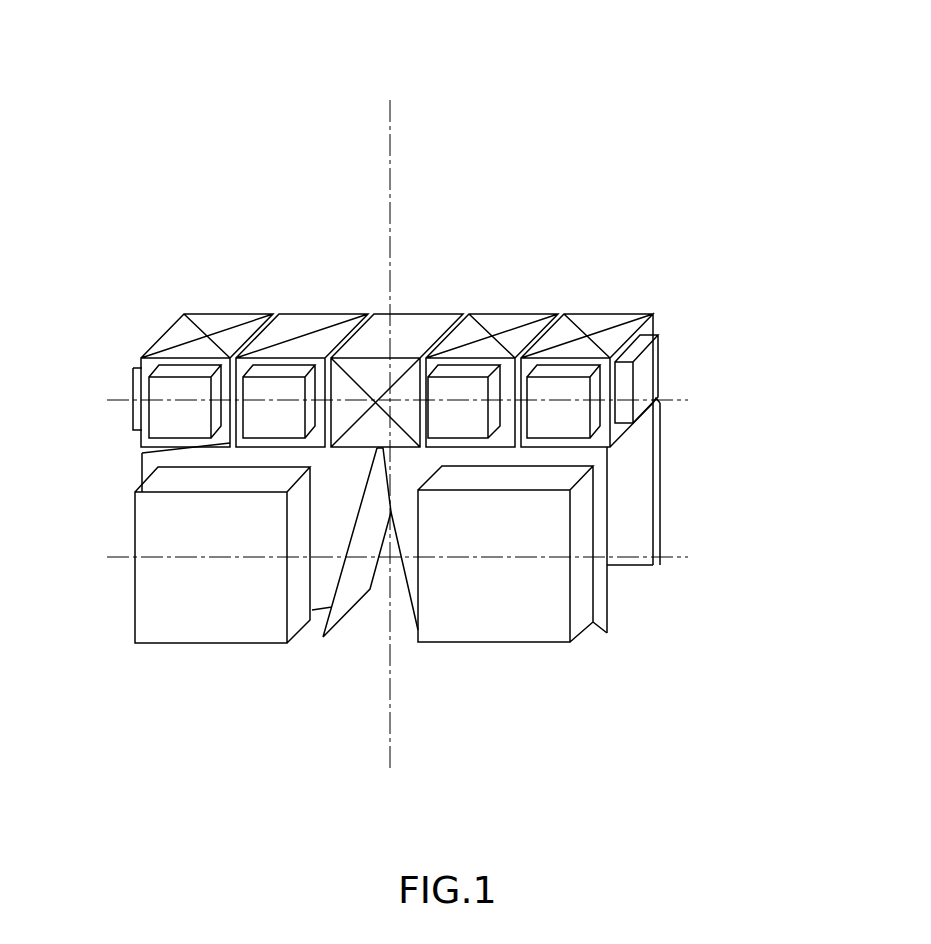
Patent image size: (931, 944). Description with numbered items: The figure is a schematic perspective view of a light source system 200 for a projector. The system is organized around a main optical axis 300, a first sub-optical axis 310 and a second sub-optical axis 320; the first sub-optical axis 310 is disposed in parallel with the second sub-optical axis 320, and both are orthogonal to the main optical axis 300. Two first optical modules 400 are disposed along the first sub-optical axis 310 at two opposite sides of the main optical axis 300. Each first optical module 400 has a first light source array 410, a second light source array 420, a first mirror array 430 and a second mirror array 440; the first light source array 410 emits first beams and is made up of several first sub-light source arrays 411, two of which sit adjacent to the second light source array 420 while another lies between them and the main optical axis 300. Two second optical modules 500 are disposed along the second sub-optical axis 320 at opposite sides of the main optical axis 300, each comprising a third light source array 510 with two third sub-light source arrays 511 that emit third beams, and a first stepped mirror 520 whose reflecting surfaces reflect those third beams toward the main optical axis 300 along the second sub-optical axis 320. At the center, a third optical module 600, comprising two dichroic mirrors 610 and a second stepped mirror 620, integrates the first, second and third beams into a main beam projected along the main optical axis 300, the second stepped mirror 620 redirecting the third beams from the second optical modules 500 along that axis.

The light source system 200 is at (302, 34).
The main optical axis 300 is at (391, 180).
The first sub-optical axis 310 is at (120, 398).
The second sub-optical axis 320 is at (118, 559).
The first optical module 400 is at (782, 228).
The first light source array 410 is at (723, 412).
The first sub-light source array 411 is at (570, 427).
The second light source array 420 is at (653, 367).
The first mirror array 430 is at (625, 310).
The second mirror array 440 is at (535, 308).
The second optical module 500 is at (752, 528).
The third light source array 510 is at (708, 565).
The third sub-light source array 511 is at (145, 628).
The first stepped mirror 520 is at (150, 467).
The third optical module 600 is at (408, 308).
The dichroic mirror 610 is at (400, 370).
The second stepped mirror 620 is at (354, 588).